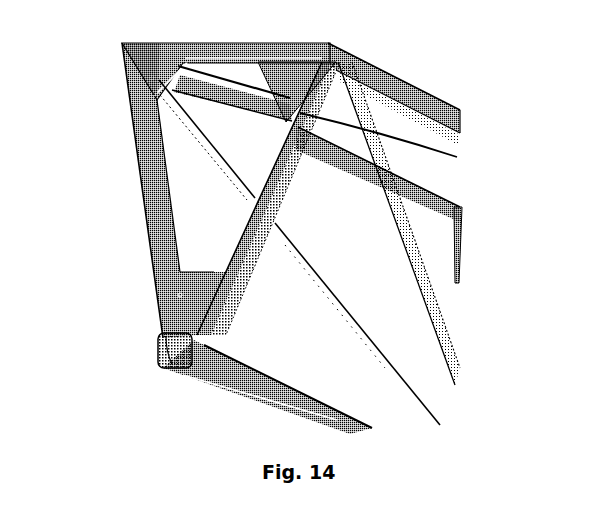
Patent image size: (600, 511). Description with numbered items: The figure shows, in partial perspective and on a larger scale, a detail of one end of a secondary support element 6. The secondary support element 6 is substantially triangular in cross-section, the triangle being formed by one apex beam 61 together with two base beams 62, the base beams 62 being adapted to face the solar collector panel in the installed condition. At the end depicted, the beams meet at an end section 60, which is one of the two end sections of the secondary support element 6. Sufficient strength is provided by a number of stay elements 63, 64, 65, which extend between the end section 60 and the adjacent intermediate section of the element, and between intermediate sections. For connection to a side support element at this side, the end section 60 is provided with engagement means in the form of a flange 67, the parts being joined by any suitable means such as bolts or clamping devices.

The secondary support element 6 is at (266, 235).
The end section 60 is at (146, 207).
The apex beam 61 is at (233, 378).
The base beam 62 is at (397, 78).
The stay element 63 is at (324, 284).
The stay element 64 is at (398, 226).
The stay element 65 is at (402, 136).
The flange 67 is at (167, 293).